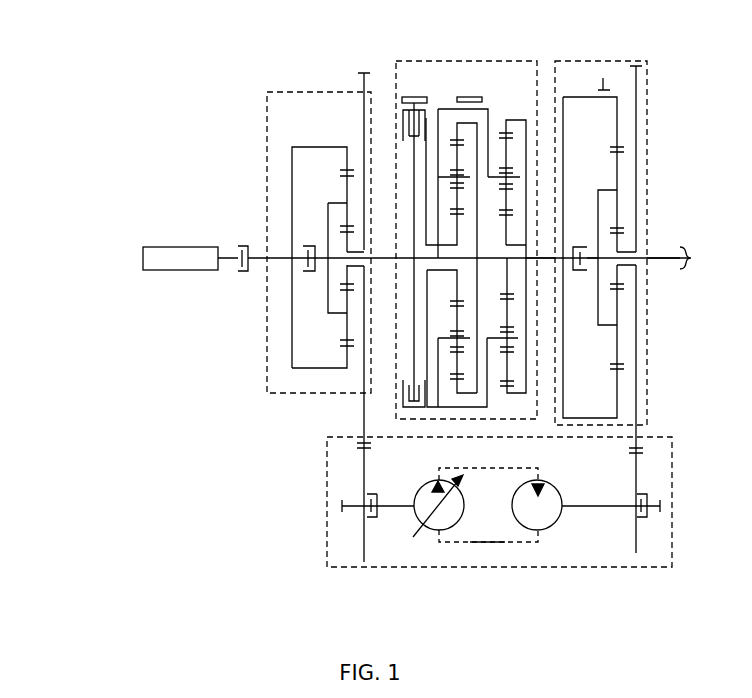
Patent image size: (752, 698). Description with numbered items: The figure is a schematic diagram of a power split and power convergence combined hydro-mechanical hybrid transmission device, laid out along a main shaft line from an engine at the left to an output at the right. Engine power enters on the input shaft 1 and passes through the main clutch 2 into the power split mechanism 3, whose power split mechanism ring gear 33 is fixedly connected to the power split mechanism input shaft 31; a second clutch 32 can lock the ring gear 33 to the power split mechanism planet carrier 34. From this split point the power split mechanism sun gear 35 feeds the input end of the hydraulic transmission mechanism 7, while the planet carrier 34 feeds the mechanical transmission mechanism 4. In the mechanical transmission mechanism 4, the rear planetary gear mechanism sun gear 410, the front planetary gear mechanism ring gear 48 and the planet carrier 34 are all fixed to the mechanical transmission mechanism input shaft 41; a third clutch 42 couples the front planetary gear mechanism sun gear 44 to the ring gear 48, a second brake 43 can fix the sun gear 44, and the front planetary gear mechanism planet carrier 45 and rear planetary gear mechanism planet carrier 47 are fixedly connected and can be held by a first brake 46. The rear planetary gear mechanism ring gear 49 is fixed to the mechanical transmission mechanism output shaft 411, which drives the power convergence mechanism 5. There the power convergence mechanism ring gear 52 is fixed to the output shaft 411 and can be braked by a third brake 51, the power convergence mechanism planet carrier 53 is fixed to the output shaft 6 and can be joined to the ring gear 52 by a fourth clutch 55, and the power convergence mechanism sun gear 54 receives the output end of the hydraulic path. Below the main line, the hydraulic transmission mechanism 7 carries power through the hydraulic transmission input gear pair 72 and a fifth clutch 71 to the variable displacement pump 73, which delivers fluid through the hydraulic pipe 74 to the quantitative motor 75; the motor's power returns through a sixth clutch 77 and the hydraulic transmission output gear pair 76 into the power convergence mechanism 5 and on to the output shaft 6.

The input shaft 1 is at (240, 246).
The main clutch C1 2 is at (288, 258).
The power split mechanism 3 is at (303, 246).
The power split mechanism input shaft 31 is at (291, 190).
The clutch C2 32 is at (328, 212).
The power split mechanism ring gear 33 is at (353, 228).
The power split mechanism planet carrier 34 is at (365, 251).
The power split mechanism sun gear 35 is at (353, 177).
The mechanical transmission mechanism 4 is at (358, 73).
The mechanical transmission mechanism input shaft 41 is at (395, 252).
The clutch C3 42 is at (408, 257).
The brake B2 43 is at (402, 120).
The front planetary gear mechanism sun gear 44 is at (457, 230).
The front planetary gear mechanism planet carrier 45 is at (437, 110).
The brake B1 46 is at (440, 108).
The rear planetary gear mechanism planet carrier 47 is at (488, 109).
The front planetary gear mechanism ring gear 48 is at (476, 158).
The rear planetary gear mechanism ring gear 49 is at (517, 120).
The rear planetary gear mechanism sun gear 410 is at (508, 243).
The mechanical transmission mechanism output shaft 411 is at (530, 259).
The power convergence mechanism 5 is at (626, 61).
The brake B3 51 is at (610, 90).
The power convergence mechanism ring gear 52 is at (617, 121).
The power convergence mechanism planet carrier 53 is at (612, 190).
The power convergence mechanism sun gear 54 is at (600, 252).
The clutch C4 55 is at (587, 270).
The output shaft 6 is at (660, 257).
The hydraulic transmission mechanism 7 is at (370, 568).
The clutch C5 71 is at (373, 450).
The hydraulic transmission input gear pair 72 is at (413, 537).
The variable displacement pump 73 is at (445, 530).
The hydraulic pipe 74 is at (487, 542).
The quantitative motor 75 is at (543, 530).
The hydraulic transmission output gear pair 76 is at (622, 473).
The clutch C6 77 is at (642, 518).